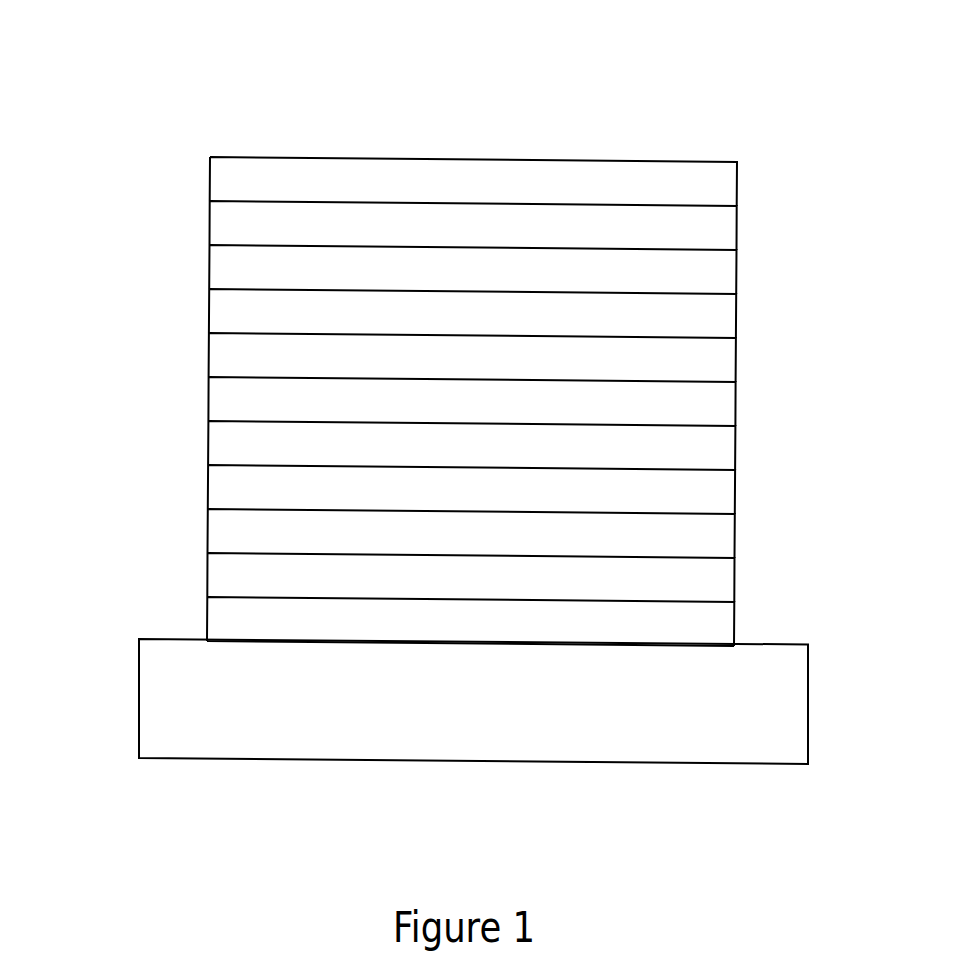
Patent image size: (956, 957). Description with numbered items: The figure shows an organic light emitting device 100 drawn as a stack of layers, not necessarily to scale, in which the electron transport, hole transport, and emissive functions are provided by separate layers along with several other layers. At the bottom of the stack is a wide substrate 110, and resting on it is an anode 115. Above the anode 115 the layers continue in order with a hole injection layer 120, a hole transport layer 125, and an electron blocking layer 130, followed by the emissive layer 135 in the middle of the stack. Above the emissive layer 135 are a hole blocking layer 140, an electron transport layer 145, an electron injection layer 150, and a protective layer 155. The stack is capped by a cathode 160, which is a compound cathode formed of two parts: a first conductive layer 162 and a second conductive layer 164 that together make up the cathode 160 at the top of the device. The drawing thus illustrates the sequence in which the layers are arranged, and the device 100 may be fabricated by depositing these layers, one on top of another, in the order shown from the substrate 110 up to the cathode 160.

The organic light emitting device 100 is at (330, 98).
The substrate 110 is at (473, 762).
The anode 115 is at (207, 619).
The hole injection layer 120 is at (207, 575).
The hole transport layer 125 is at (208, 531).
The electron blocking layer 130 is at (208, 487).
The emissive layer 135 is at (208, 443).
The hole blocking layer 140 is at (208, 399).
The electron transport layer 145 is at (209, 355).
The electron injection layer 150 is at (209, 311).
The protective layer 155 is at (210, 267).
The cathode 160 is at (448, 173).
The first conductive layer 162 is at (737, 185).
The second conductive layer 164 is at (473, 158).